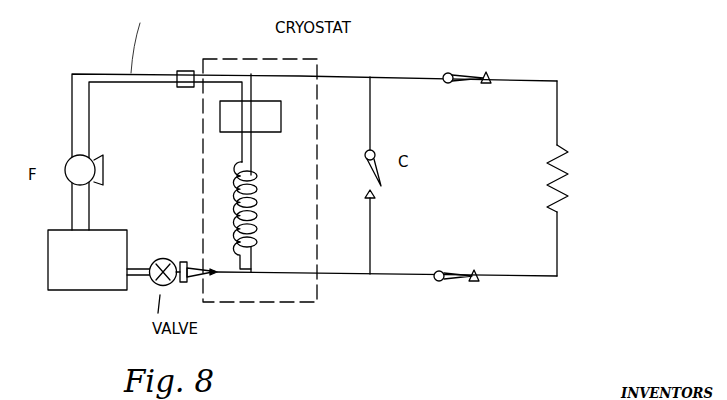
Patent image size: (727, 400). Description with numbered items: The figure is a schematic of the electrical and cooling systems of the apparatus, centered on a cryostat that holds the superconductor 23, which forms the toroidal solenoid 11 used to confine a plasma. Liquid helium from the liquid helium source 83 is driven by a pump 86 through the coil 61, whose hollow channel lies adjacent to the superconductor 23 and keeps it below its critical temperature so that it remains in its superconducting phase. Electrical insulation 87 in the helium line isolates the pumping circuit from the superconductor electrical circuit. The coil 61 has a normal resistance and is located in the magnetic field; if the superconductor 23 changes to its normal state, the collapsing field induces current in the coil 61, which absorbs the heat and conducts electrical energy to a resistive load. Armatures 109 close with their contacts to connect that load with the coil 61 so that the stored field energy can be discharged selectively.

The toroidal solenoid 11 is at (229, 182).
The superconductor 23 is at (241, 139).
The coil 61 is at (256, 155).
The liquid helium source 83 is at (86, 292).
The pump 86 is at (105, 169).
The electrical insulation 87 is at (183, 70).
The armatures 109 is at (462, 72).